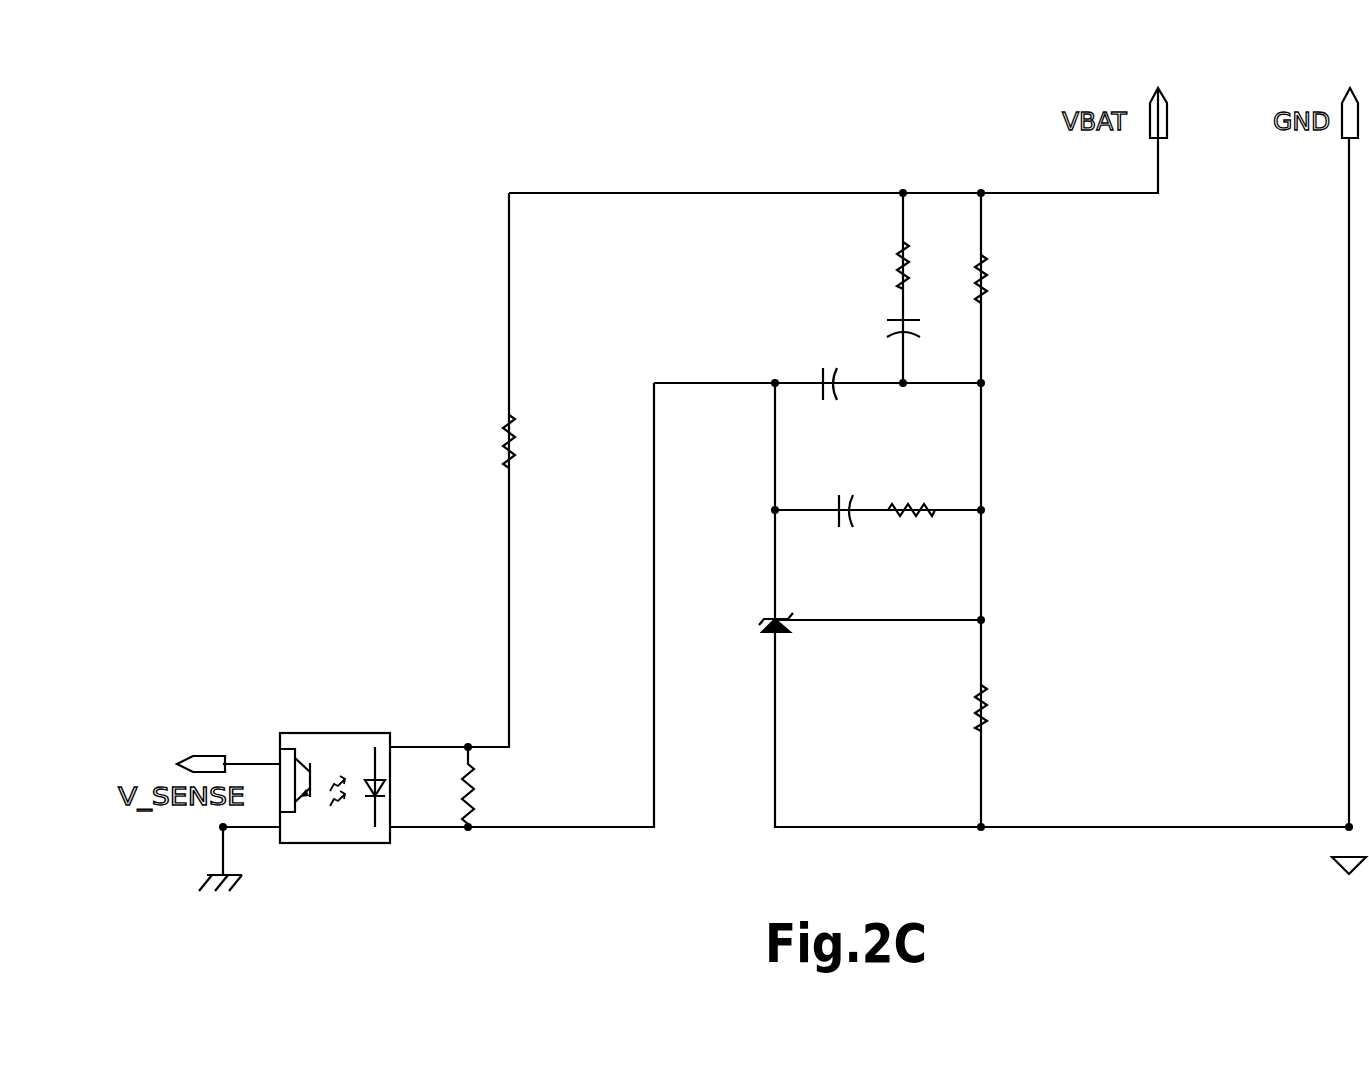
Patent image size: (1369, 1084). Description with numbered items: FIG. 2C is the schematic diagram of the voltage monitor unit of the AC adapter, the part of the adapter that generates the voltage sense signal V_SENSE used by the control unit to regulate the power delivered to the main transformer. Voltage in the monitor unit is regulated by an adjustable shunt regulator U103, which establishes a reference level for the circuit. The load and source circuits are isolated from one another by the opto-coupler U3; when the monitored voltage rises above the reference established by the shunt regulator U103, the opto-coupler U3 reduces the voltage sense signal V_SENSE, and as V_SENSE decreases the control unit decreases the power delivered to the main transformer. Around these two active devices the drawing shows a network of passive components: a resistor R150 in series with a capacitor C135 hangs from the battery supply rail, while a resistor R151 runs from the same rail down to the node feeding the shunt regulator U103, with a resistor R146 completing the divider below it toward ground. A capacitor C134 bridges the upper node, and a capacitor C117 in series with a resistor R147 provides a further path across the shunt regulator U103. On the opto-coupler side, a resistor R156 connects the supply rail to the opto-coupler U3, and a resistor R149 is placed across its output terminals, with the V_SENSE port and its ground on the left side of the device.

The opto-coupler U3 is at (329, 792).
The resistor 10K R149 is at (508, 787).
The resistor 2.4K R156 is at (559, 444).
The resistor 1K R150 is at (868, 259).
The capacitor 0.047uF C135 is at (846, 326).
The resistor 3.24K .5% R151 is at (1023, 281).
The capacitor 100pF C134 is at (836, 411).
The capacitor 0.1uF C117 is at (838, 513).
The resistor 51K R147 is at (923, 513).
The adjustable shunt regulator U103 is at (834, 668).
The resistor 499 .5% R146 is at (1019, 709).